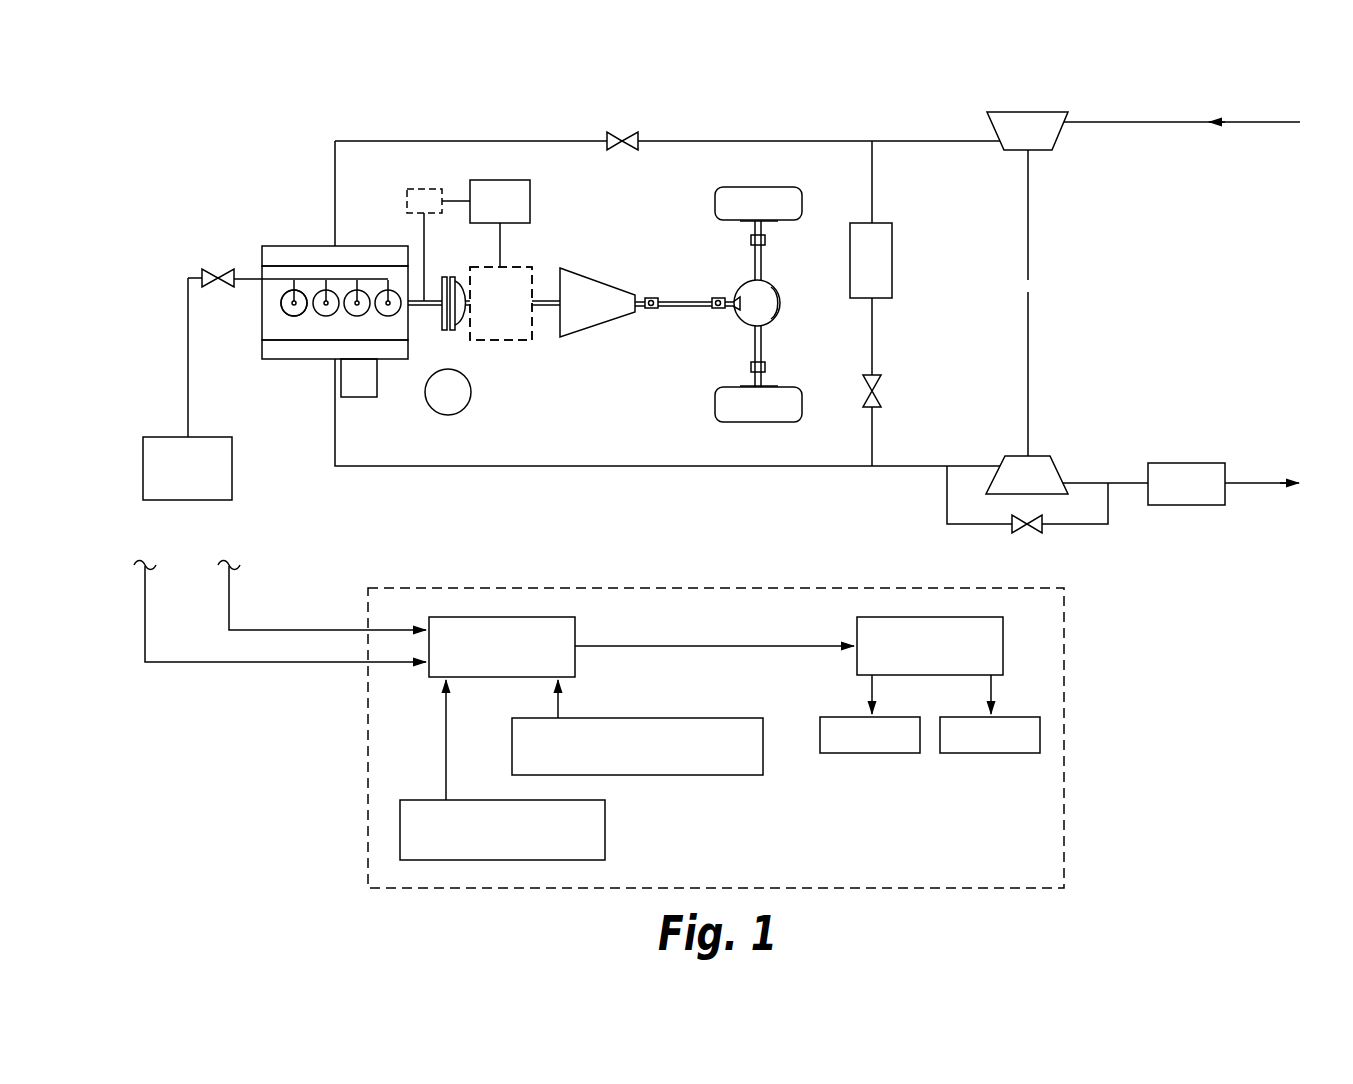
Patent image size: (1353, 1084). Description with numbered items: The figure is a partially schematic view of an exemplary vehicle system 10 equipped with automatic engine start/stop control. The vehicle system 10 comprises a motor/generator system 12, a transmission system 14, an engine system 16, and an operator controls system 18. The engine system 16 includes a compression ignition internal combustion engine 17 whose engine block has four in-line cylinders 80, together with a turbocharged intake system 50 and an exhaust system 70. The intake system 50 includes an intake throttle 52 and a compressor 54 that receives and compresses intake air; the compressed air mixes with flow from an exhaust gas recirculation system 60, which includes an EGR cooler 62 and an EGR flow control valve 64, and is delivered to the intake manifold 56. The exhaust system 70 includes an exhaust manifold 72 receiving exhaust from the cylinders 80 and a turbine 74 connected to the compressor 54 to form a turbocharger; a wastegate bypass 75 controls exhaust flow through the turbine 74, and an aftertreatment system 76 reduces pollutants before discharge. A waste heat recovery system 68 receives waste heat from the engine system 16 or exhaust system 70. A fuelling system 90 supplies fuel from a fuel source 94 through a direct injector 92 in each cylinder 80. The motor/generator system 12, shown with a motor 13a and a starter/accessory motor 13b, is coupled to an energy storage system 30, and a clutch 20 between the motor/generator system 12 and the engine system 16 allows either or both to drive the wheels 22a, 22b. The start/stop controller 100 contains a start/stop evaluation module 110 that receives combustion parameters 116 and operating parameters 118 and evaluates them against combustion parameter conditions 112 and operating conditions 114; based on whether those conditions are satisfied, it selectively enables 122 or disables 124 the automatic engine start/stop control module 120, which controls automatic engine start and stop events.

The vehicle system 10 is at (389, 78).
The motor/generator system 12 is at (489, 358).
The motor 13a is at (520, 285).
The starter/accessory motor 13b is at (414, 188).
The transmission system 14 is at (600, 314).
The engine system 16 is at (258, 269).
The engine 17 is at (278, 331).
The operator controls system 18 is at (460, 404).
The clutch 20 is at (444, 277).
The wheel 22a is at (750, 187).
The wheel 22b is at (790, 386).
The energy storage system 30 is at (512, 213).
The intake system 50 is at (504, 132).
The intake throttle 52 is at (643, 132).
The compressor 54 is at (1048, 111).
The intake manifold 56 is at (292, 245).
The exhaust gas recirculation system 60 is at (877, 199).
The EGR cooler 62 is at (897, 289).
The EGR flow control valve 64 is at (882, 400).
The waste heat recovery system 68 is at (378, 390).
The exhaust system 70 is at (1131, 478).
The exhaust manifold 72 is at (290, 360).
The turbine 74 is at (1062, 455).
The wastegate bypass 75 is at (1044, 527).
The aftertreatment system 76 is at (1210, 462).
The cylinders 80 is at (322, 286).
The fuelling system 90 is at (185, 360).
The direct injector 92 is at (283, 309).
The fuel source 94 is at (200, 480).
The start/stop controller 100 is at (1073, 760).
The start/stop evaluation module 110 is at (580, 632).
The combustion parameter conditions 112 is at (768, 778).
The operating conditions 114 is at (606, 841).
The combustion parameters 116 is at (261, 629).
The operating parameters 118 is at (181, 661).
The automatic engine start/stop control module 120 is at (1005, 653).
The enable 122 is at (864, 755).
The disable 124 is at (977, 756).